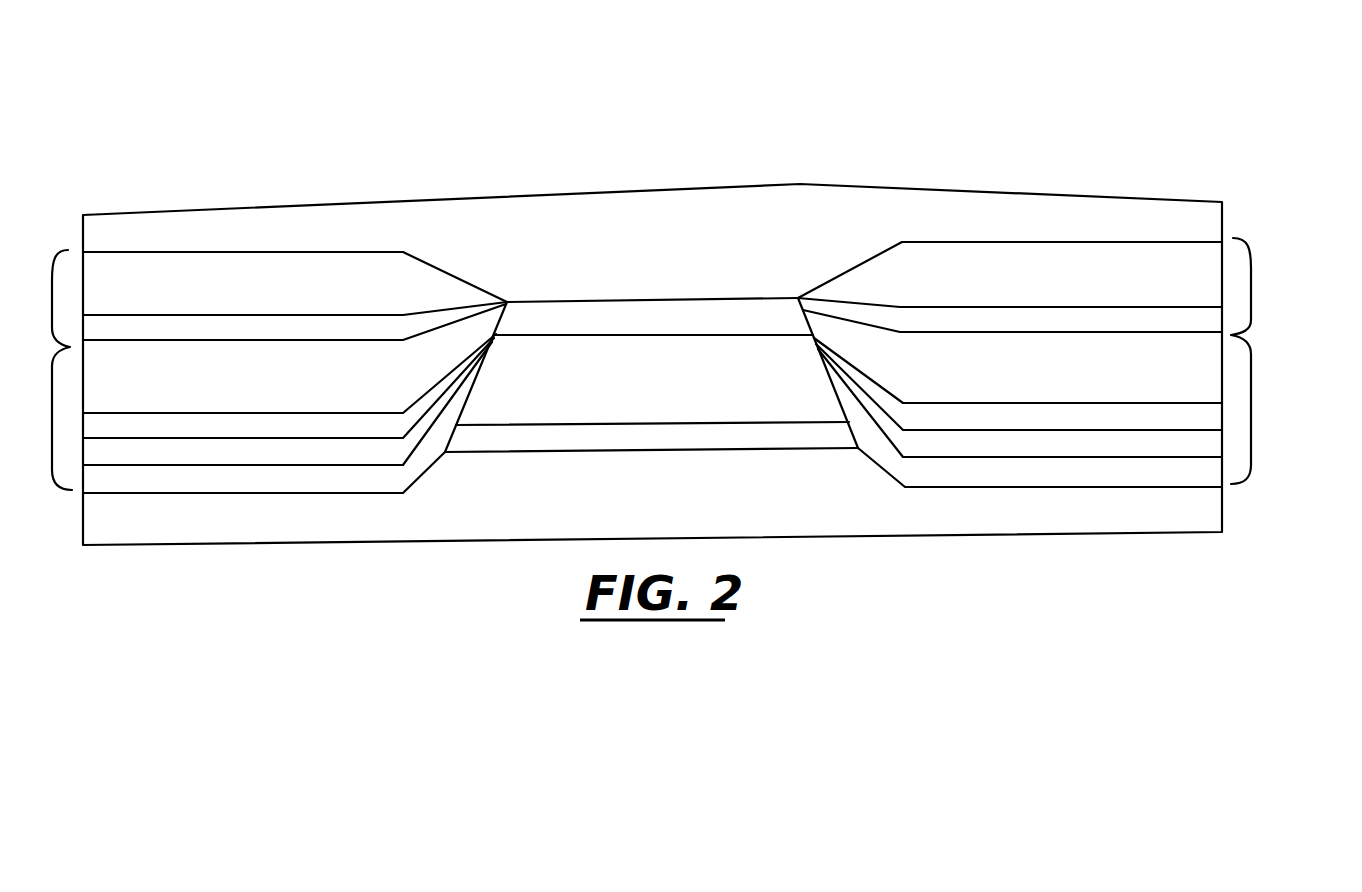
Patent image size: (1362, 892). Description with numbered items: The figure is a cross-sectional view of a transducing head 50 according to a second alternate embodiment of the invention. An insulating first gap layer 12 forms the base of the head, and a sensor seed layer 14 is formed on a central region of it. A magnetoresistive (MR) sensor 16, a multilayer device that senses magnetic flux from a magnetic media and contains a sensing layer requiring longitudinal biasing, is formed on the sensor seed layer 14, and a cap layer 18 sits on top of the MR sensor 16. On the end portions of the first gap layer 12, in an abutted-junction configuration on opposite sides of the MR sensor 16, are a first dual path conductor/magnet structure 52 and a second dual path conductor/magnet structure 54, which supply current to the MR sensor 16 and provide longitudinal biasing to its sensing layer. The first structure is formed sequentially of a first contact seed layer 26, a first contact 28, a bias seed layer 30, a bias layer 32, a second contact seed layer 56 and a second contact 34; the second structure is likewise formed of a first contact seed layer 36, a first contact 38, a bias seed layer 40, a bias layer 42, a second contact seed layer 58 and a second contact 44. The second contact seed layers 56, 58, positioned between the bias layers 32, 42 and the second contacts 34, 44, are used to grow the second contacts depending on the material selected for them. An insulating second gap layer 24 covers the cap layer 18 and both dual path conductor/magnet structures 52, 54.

The first gap layer 12 is at (1041, 524).
The sensor seed layer 14 is at (831, 447).
The magnetoresistive (MR) sensor 16 is at (831, 417).
The cap layer 18 is at (781, 331).
The second gap layer 24 is at (778, 251).
The first contact seed layer 26 is at (368, 491).
The first contact 28 is at (368, 464).
The bias seed layer 30 is at (375, 437).
The bias layer 32 is at (368, 384).
The second contact 34 is at (368, 303).
The first contact seed layer 36 is at (956, 482).
The first contact 38 is at (956, 457).
The bias seed layer 40 is at (956, 431).
The bias layer 42 is at (956, 379).
The second contact 44 is at (951, 297).
The transducing head 50 is at (1220, 100).
The first dual path conductor/magnet structure 52 is at (46, 370).
The second dual path conductor/magnet structure 54 is at (1255, 361).
The second contact seed layer 56 is at (368, 337).
The second contact seed layer 58 is at (951, 331).